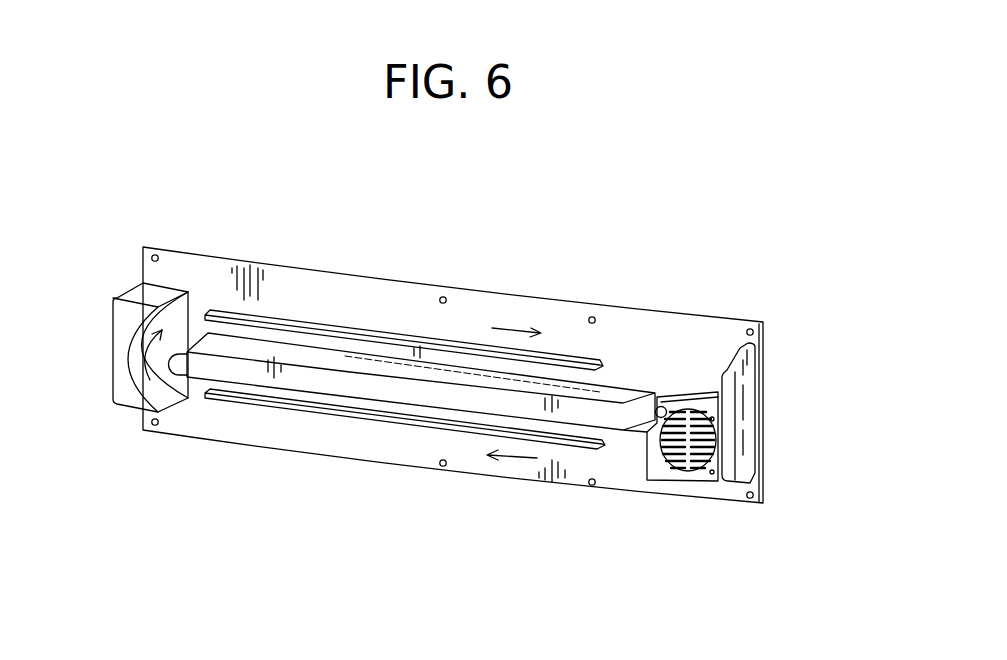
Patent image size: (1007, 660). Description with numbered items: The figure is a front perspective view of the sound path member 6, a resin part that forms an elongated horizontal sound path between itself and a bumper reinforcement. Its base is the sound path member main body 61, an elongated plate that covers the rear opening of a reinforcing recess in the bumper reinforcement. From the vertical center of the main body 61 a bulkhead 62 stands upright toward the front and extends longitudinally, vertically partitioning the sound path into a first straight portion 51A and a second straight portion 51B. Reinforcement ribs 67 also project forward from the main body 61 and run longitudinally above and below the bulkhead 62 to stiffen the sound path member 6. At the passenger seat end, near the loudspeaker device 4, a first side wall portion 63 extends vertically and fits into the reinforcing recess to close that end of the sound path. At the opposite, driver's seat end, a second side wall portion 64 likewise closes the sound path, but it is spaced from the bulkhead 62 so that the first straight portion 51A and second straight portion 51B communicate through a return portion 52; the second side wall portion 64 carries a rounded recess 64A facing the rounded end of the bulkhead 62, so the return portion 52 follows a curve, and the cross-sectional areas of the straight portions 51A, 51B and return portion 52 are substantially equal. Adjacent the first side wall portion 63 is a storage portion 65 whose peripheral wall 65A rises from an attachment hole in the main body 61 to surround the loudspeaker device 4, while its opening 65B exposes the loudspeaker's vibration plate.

The sound path member 6 is at (698, 268).
The sound path member main body 61 is at (715, 334).
The reinforcement rib 67 is at (372, 333).
The bulkhead 62 is at (395, 393).
The return portion 52 is at (160, 377).
The second side wall portion 64 is at (115, 393).
The recess 64A is at (160, 326).
The first straight portion 51A is at (515, 460).
The second straight portion 51B is at (517, 327).
The storage portion 65 is at (690, 381).
The peripheral wall 65A is at (668, 393).
The opening 65B is at (687, 461).
The loudspeaker device 4 is at (680, 442).
The first side wall portion 63 is at (738, 452).